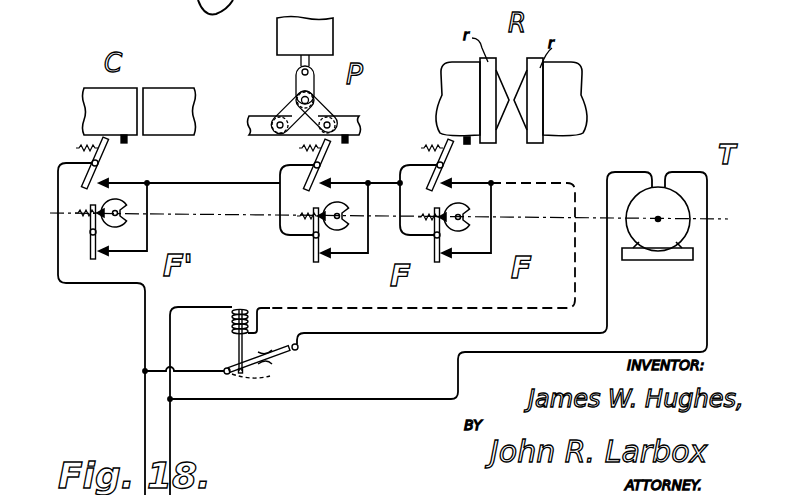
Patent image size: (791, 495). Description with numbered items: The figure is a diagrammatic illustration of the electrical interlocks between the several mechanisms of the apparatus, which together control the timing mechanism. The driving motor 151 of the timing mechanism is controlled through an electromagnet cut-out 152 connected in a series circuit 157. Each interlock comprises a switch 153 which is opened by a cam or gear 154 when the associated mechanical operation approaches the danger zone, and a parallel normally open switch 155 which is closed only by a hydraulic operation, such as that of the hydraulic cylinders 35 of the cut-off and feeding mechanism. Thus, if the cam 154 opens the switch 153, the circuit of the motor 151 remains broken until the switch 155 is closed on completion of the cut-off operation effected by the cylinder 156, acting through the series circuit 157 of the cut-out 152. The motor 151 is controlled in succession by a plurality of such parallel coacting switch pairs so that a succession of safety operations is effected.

The hydraulic cylinders 35 is at (172, 98).
The driving motor 151 is at (676, 210).
The electromagnet cut-out 152 is at (272, 357).
The switch 153 is at (97, 256).
The cam or gear 154 is at (122, 222).
The parallel normally open switch 155 is at (103, 180).
The cylinder 156 is at (320, 32).
The series circuit 157 is at (190, 184).